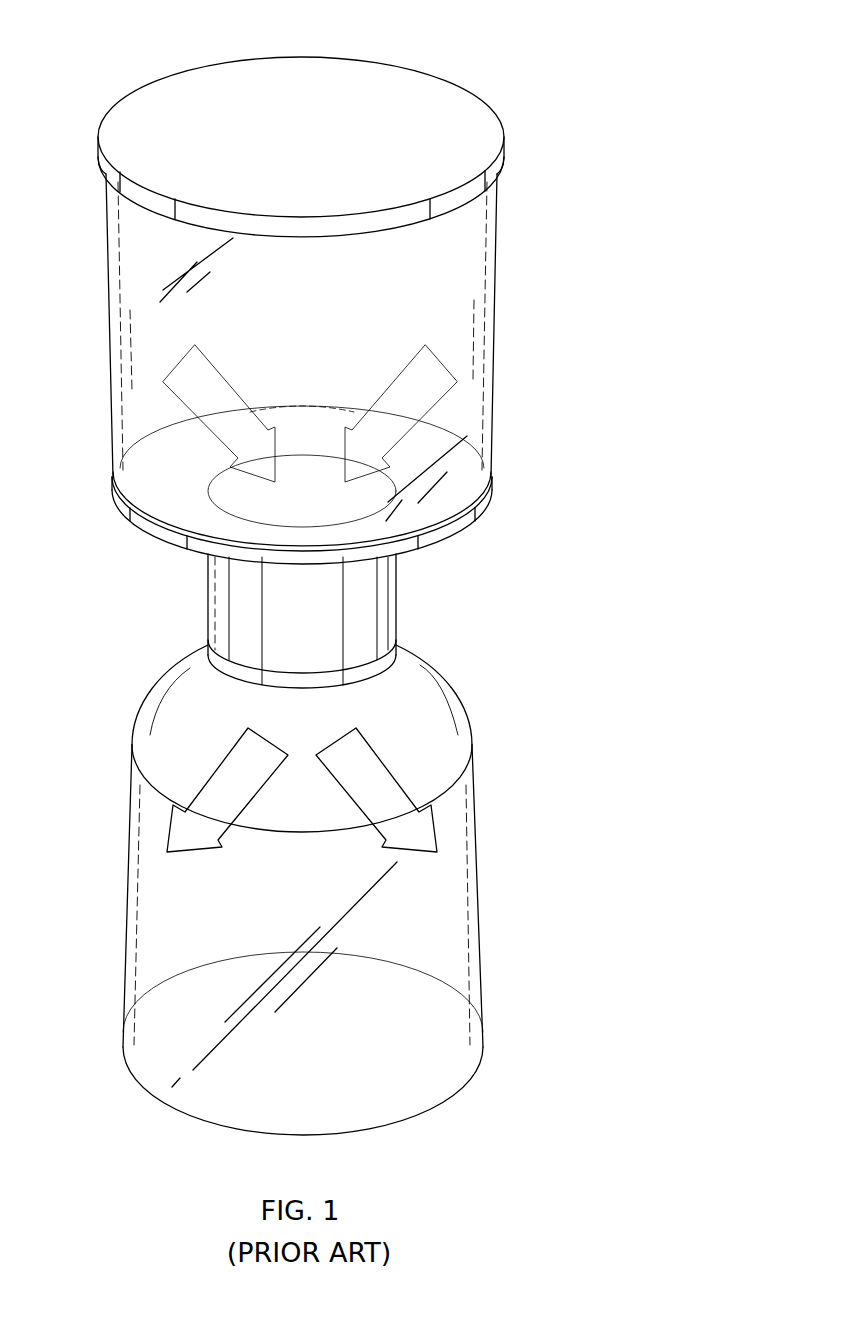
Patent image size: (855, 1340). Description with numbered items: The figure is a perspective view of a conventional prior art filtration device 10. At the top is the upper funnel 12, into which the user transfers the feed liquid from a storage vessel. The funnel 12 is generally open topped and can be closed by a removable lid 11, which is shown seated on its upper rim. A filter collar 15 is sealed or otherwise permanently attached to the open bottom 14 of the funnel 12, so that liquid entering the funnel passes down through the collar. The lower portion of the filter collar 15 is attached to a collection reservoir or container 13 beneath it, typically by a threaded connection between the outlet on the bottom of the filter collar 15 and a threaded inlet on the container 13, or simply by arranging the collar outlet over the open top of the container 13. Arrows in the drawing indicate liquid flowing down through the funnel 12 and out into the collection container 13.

The device 10 is at (96, 55).
The removable lid 11 is at (482, 98).
The upper funnel 12 is at (492, 441).
The collection reservoir or container 13 is at (152, 687).
The open bottom 14 is at (455, 530).
The filter collar 15 is at (378, 604).